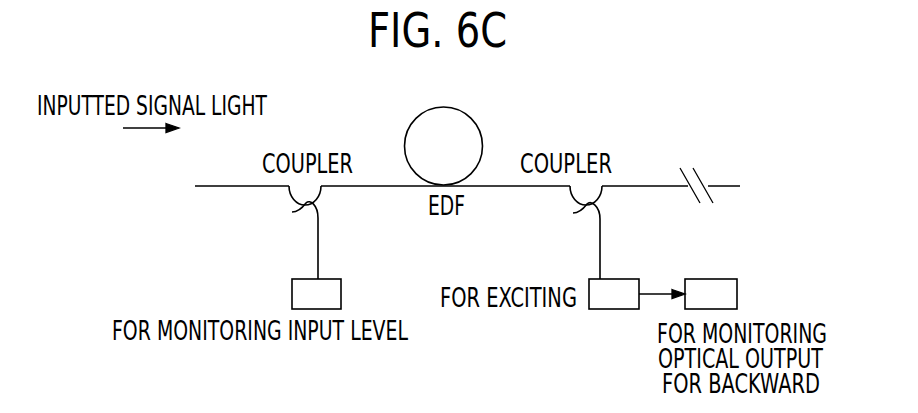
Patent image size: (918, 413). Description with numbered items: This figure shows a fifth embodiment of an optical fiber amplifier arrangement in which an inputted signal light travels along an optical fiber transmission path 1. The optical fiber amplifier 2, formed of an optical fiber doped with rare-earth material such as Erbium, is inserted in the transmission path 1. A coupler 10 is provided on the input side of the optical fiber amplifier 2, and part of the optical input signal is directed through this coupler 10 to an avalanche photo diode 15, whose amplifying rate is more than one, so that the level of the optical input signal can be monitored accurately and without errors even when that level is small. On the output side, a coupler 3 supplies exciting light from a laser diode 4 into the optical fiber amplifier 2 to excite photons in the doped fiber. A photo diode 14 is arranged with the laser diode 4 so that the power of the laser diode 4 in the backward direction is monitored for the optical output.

The optical fiber transmission path 1 is at (392, 187).
The optical fiber amplifier 2 is at (480, 134).
The coupler 3 is at (602, 191).
The laser diode 4 is at (614, 309).
The coupler 10 is at (290, 188).
The photo diode 14 is at (717, 279).
The avalanche photo diode 15 is at (341, 292).